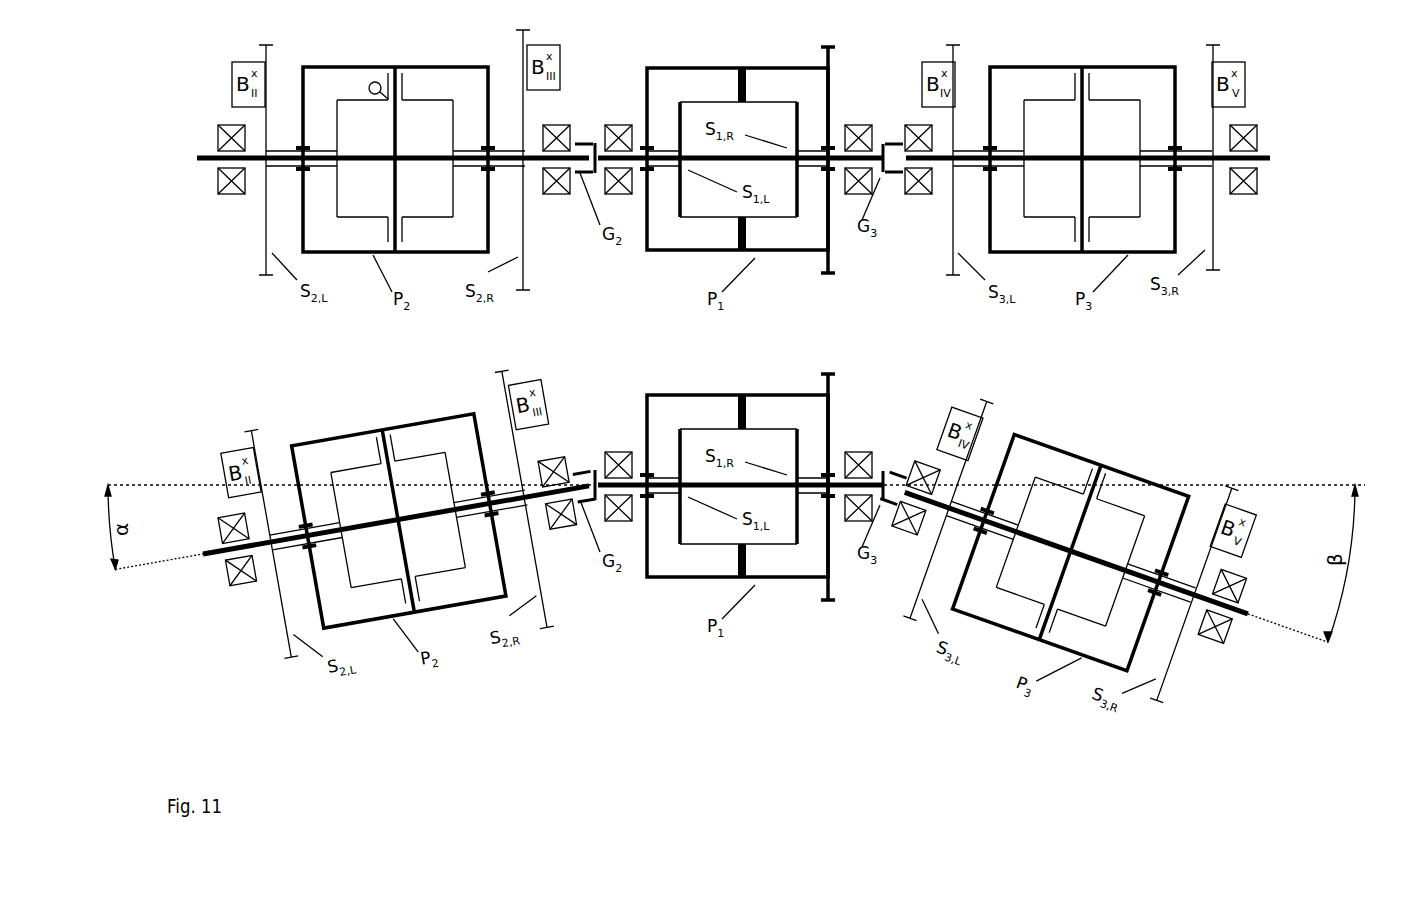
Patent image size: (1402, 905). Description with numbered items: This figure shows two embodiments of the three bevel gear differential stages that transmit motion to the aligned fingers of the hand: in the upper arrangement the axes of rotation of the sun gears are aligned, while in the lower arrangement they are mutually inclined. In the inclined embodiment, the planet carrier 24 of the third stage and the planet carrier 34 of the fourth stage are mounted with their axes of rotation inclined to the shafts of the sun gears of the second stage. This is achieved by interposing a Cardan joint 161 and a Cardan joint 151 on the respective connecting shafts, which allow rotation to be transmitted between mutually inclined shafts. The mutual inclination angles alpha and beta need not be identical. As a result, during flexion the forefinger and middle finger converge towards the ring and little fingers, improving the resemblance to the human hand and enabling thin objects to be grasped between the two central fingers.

The planet carrier of the third stage 24 is at (337, 430).
The planet carrier of the fourth stage 34 is at (1083, 447).
The Cardan joint 161 is at (590, 463).
The Cardan joint 151 is at (887, 463).